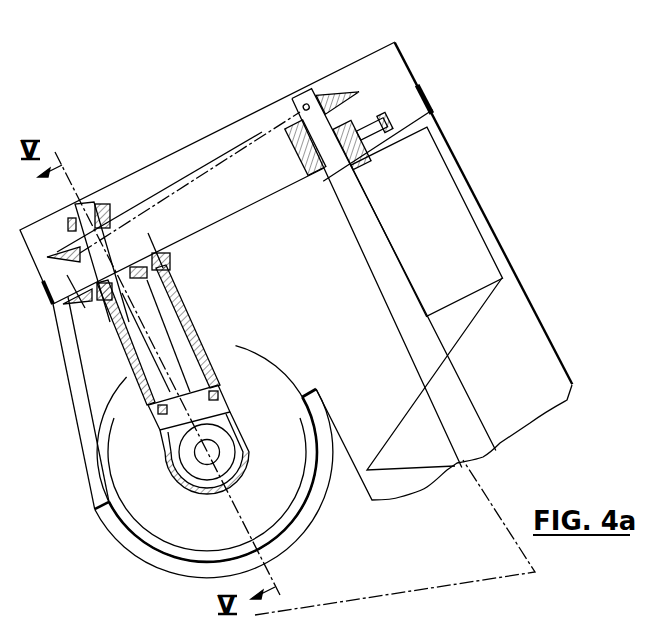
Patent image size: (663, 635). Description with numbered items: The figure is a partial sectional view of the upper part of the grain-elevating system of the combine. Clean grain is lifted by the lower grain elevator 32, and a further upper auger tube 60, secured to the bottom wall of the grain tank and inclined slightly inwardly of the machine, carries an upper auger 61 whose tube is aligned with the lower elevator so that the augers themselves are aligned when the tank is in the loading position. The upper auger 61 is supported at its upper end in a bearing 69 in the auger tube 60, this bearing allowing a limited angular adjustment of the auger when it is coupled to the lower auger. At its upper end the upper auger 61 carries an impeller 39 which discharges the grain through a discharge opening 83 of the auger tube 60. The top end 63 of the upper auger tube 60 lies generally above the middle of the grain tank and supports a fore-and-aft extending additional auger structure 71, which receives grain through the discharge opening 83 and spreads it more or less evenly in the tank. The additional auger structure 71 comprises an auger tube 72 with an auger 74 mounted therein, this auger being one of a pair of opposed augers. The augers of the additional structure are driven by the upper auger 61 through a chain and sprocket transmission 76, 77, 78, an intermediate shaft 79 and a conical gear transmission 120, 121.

The lower grain elevator 32 is at (565, 368).
The impeller 39 is at (498, 260).
The upper auger tube 60 is at (548, 333).
The upper auger 61 is at (475, 322).
The top end of upper auger tube 63 is at (450, 66).
The bearing 69 is at (353, 151).
The additional auger structure 71 is at (117, 545).
The auger tube 72 is at (110, 534).
The auger 74 is at (100, 443).
The chain and sprocket transmission 76 is at (333, 100).
The chain and sprocket transmission 77 is at (173, 183).
The chain and sprocket transmission 78 is at (123, 213).
The intermediate shaft 79 is at (167, 330).
The discharge opening 83 is at (293, 312).
The conical gear transmission 120 is at (240, 418).
The conical gear transmission 121 is at (243, 441).